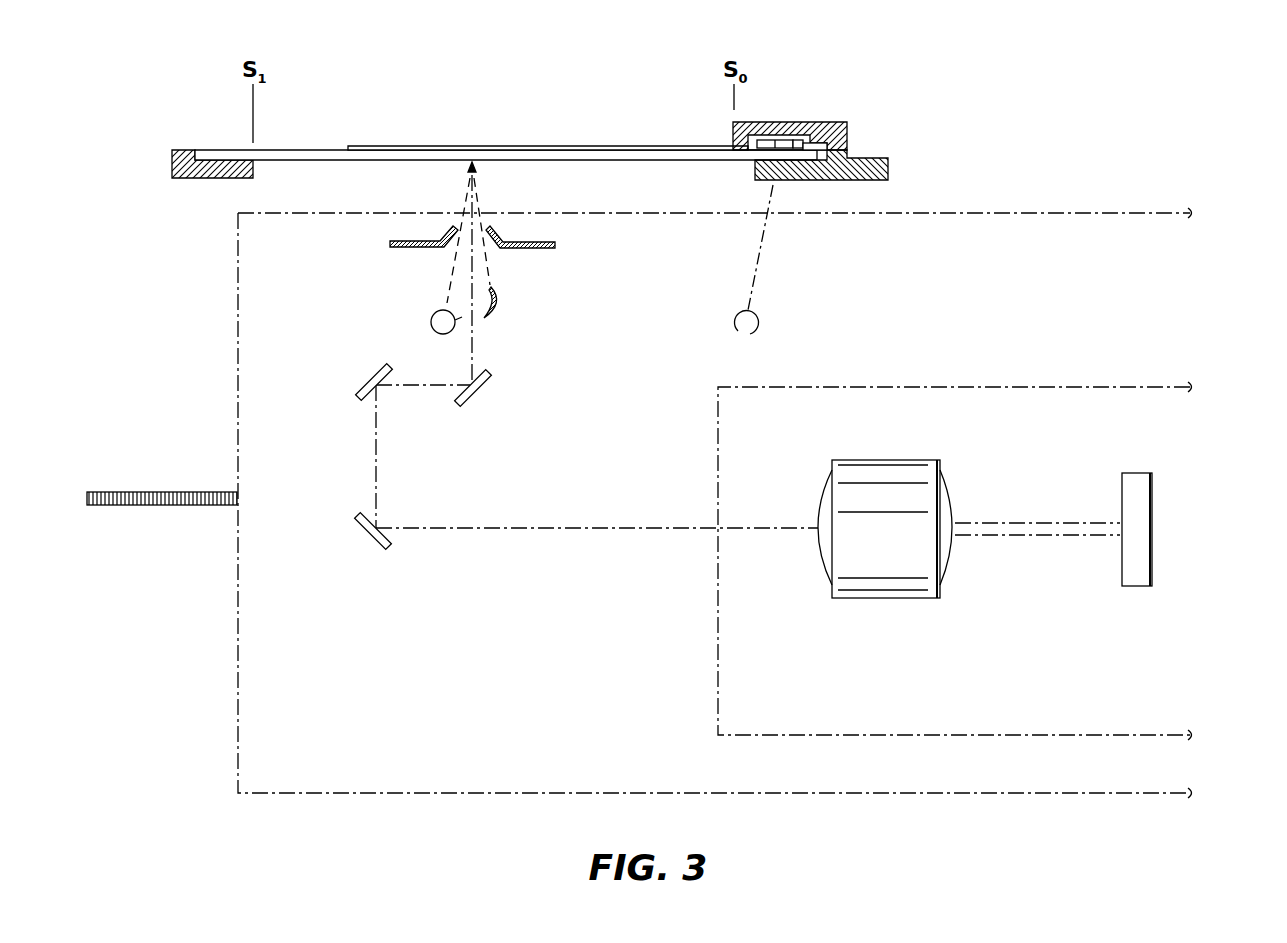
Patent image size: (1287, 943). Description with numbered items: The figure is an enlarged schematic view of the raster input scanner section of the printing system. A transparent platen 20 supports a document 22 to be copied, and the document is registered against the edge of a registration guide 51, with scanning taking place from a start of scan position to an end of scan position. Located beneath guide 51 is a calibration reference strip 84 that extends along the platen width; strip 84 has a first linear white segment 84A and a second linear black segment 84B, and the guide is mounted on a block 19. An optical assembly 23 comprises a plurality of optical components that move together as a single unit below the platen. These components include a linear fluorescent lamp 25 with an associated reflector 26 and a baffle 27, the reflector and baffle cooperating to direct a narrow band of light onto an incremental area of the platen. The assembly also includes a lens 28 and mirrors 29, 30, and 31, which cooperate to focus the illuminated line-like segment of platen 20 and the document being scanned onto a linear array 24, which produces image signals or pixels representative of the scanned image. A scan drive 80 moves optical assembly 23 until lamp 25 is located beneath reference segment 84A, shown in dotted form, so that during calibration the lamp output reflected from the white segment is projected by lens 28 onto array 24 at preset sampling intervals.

The lower clamp block 19 is at (800, 180).
The transparent platen 20 is at (311, 150).
The document 22 is at (490, 146).
The optical assembly 23 is at (1143, 170).
The linear array 24 is at (1127, 576).
The linear fluorescent lamp 25 is at (431, 322).
The reflector 26 is at (497, 310).
The baffle 27 is at (555, 247).
The lens 28 is at (887, 468).
The mirror 29 is at (478, 386).
The mirror 30 is at (357, 398).
The mirror 31 is at (370, 531).
The registration guide 51 is at (798, 140).
The scan drive 80 is at (151, 505).
The calibration reference strip 84 is at (775, 122).
The first linear white segment 84A is at (827, 146).
The second linear black segment 84B is at (757, 144).